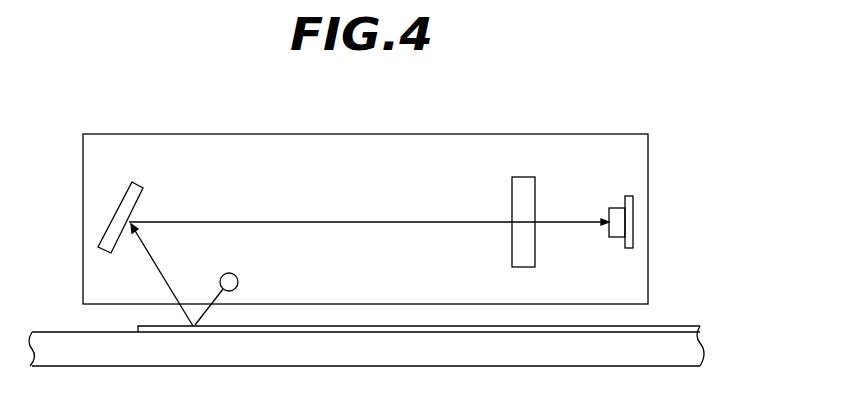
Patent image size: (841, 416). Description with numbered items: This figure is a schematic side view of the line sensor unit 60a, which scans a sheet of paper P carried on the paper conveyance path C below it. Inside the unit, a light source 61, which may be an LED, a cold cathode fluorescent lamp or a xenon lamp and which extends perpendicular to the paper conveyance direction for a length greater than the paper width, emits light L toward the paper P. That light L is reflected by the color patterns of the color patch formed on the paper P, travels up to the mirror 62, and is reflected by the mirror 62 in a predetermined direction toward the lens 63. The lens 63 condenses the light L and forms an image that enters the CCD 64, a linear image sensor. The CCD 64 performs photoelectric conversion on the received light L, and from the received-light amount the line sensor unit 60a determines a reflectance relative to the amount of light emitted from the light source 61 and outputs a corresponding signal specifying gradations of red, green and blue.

The line sensor unit 60a is at (468, 133).
The light source 61 is at (238, 278).
The mirror 62 is at (142, 191).
The lens 63 is at (537, 193).
The CCD 64 is at (633, 213).
The light L is at (196, 321).
The paper P is at (658, 331).
The paper conveyance path C is at (638, 357).